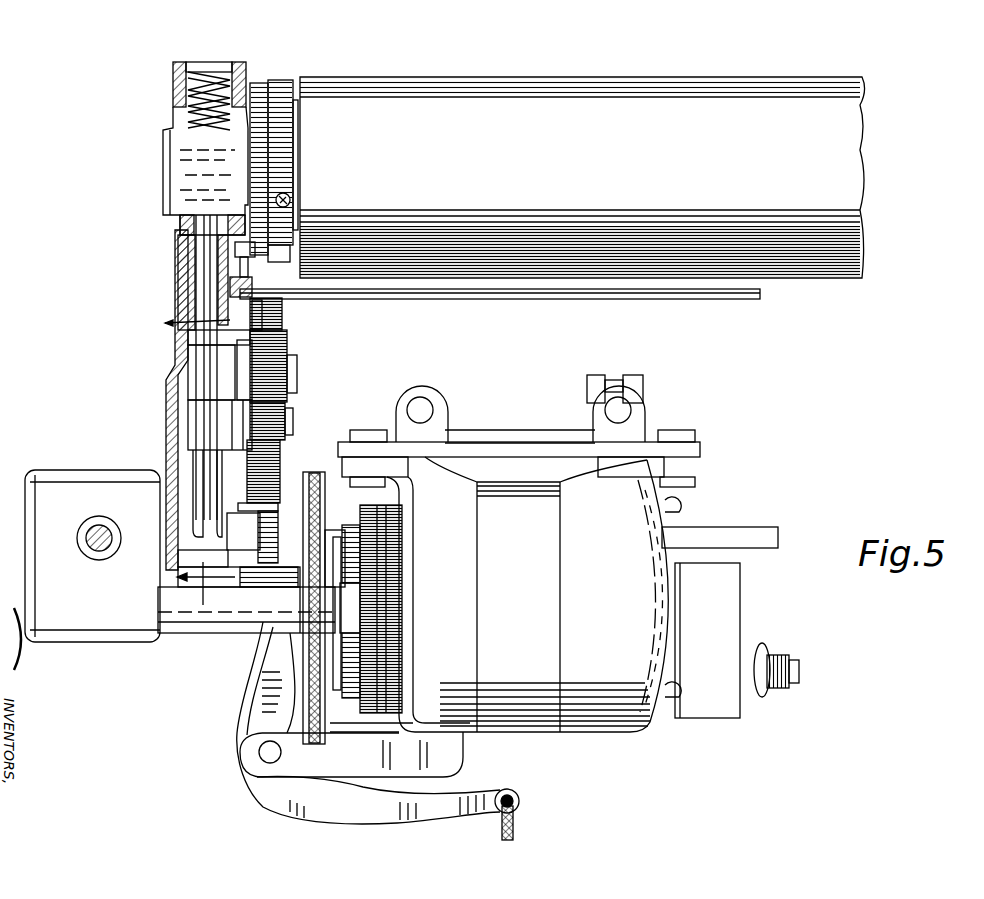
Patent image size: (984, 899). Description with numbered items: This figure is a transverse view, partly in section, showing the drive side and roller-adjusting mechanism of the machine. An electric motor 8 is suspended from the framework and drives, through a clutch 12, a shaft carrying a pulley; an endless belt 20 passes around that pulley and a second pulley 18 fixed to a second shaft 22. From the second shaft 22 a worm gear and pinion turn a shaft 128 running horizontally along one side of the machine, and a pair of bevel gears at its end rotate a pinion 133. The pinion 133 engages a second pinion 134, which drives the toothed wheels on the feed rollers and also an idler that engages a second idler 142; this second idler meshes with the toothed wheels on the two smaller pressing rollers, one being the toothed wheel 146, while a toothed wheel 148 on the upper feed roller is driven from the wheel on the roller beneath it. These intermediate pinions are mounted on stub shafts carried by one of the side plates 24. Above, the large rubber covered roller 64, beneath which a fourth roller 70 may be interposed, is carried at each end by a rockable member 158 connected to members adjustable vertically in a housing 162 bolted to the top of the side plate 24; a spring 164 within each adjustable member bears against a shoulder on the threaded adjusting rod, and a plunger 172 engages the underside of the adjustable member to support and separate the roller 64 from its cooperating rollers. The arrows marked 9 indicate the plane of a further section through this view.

The electric motor 8 is at (564, 553).
The shaft 9 is at (187, 458).
The clutch 12 is at (395, 600).
The second pulley 18 is at (340, 714).
The endless belt 20 is at (320, 498).
The second shaft 22 is at (358, 603).
The side plates 24 is at (170, 402).
The rubber covered roller 64 is at (840, 146).
The fourth roller 70 is at (507, 298).
The shaft 128 is at (99, 552).
The pinion 133 is at (248, 585).
The second pinion 134 is at (278, 478).
The second idler 142 is at (295, 420).
The toothed wheel 146 is at (290, 345).
The toothed wheel 148 is at (280, 312).
The rockable member 158 is at (280, 108).
The housing 162 is at (246, 183).
The spring 164 is at (185, 110).
The plunger 172 is at (225, 297).